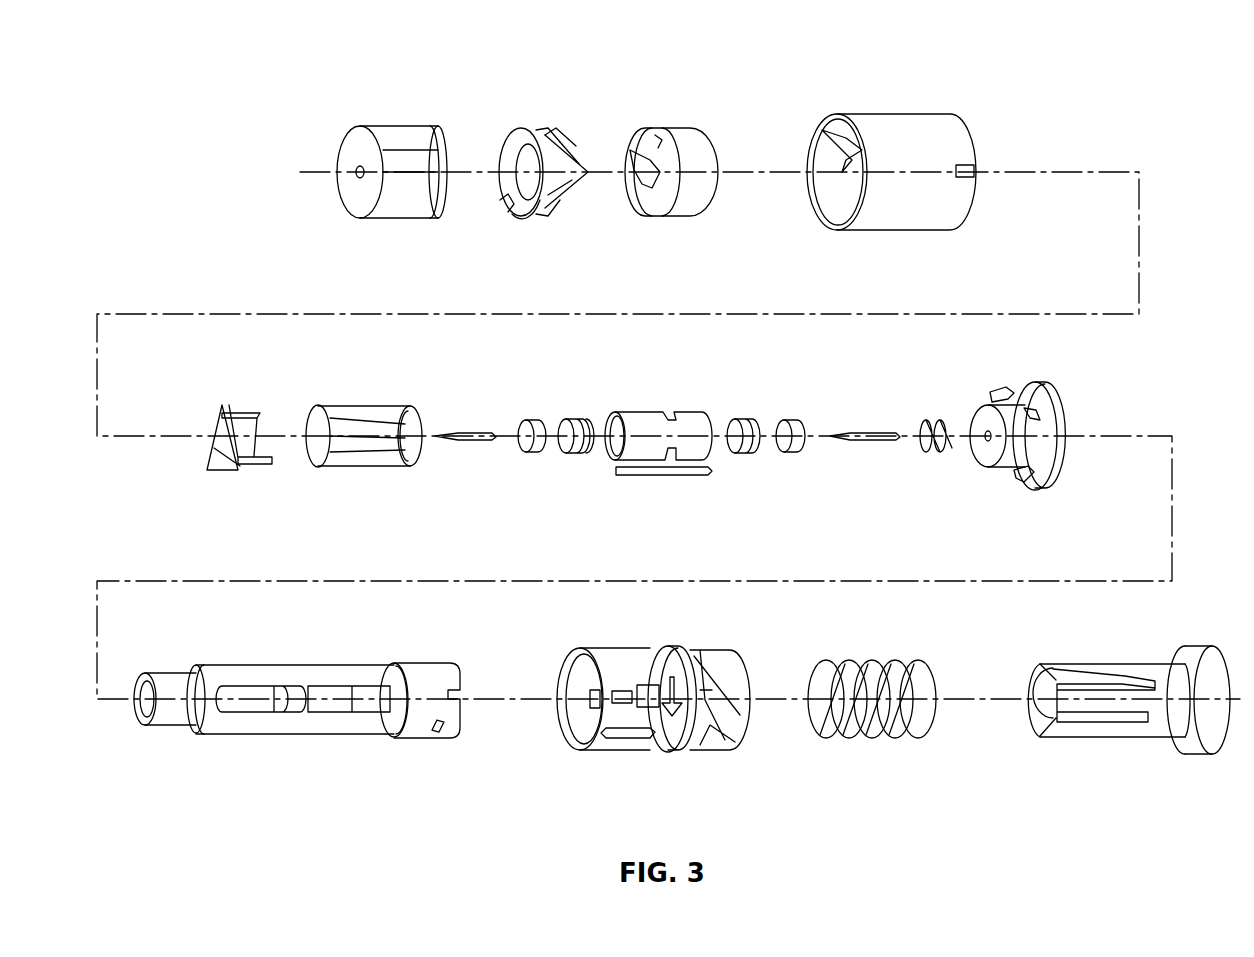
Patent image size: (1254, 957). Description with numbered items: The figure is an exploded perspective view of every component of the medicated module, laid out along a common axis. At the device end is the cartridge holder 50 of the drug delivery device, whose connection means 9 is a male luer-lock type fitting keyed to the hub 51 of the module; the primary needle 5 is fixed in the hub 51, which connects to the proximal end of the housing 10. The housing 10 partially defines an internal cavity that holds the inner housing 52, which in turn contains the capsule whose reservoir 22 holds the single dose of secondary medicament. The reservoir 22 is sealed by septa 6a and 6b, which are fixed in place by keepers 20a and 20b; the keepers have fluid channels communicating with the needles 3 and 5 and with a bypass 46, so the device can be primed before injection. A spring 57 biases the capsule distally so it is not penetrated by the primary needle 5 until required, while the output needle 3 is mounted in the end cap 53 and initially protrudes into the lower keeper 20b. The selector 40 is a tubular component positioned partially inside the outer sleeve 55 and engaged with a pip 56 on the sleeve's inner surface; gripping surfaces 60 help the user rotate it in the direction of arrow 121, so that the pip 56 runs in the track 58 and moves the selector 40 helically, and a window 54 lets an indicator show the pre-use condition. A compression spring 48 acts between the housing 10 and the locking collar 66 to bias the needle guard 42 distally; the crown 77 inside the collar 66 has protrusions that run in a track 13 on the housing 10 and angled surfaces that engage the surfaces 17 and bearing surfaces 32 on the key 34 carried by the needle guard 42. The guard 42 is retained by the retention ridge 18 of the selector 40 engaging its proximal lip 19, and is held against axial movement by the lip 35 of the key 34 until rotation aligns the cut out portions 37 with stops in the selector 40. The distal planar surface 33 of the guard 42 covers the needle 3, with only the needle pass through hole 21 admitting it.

The needle pass through hole 21 is at (354, 172).
The planar surface 33 is at (352, 142).
The needle guard 42 is at (388, 138).
The proximal lip 19 is at (442, 206).
The cut out portions 37 is at (508, 158).
The key 34 is at (548, 140).
The proximally facing surfaces 17 is at (582, 168).
The proximally facing bearing surfaces 32 is at (568, 188).
The lip 35 is at (528, 216).
The crown 77 is at (636, 158).
The locking collar 66 is at (690, 148).
The pip 56 is at (836, 150).
The outer sleeve 55 is at (918, 128).
The end cap 53 is at (238, 412).
The inner housing 52 is at (352, 412).
The output needle 3 is at (450, 430).
The keeper 20b is at (524, 422).
The septum 6b is at (576, 422).
The reservoir 22 is at (638, 420).
The bypass 46 is at (666, 478).
The septum 6a is at (732, 422).
The keeper 20a is at (790, 422).
The primary needle 5 is at (858, 432).
The spring 57 is at (922, 428).
The hub 51 is at (1018, 412).
The connection means 9 is at (168, 680).
The cartridge holder 50 is at (288, 678).
The retention ridge 18 is at (562, 682).
The window 54 is at (648, 690).
The arrow 121 is at (665, 690).
The track 58 is at (724, 680).
The gripping surfaces 60 is at (622, 744).
The selector 40 is at (652, 754).
The compression spring 48 is at (874, 668).
The track 13 is at (1138, 678).
The housing 10 is at (1208, 672).